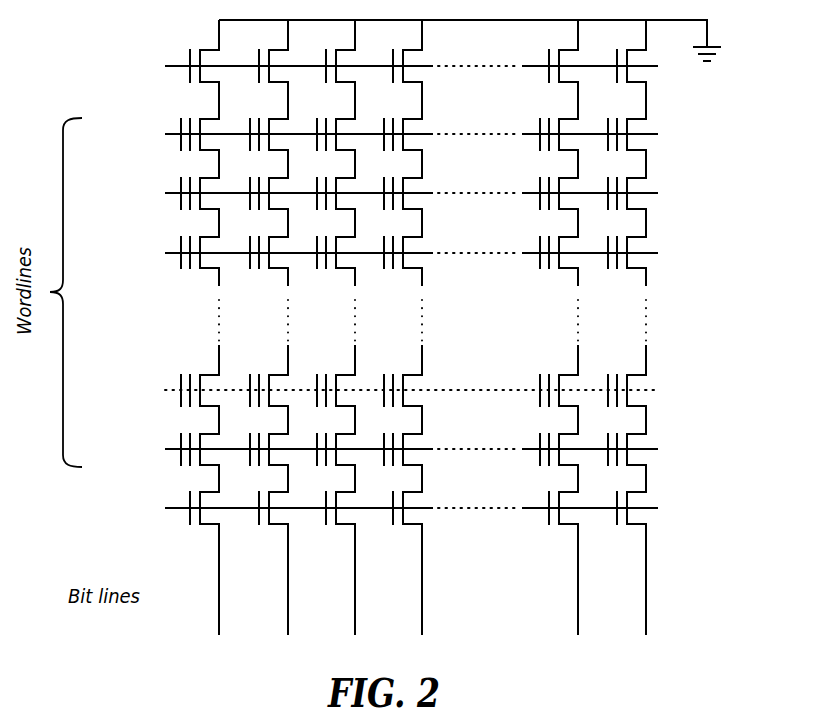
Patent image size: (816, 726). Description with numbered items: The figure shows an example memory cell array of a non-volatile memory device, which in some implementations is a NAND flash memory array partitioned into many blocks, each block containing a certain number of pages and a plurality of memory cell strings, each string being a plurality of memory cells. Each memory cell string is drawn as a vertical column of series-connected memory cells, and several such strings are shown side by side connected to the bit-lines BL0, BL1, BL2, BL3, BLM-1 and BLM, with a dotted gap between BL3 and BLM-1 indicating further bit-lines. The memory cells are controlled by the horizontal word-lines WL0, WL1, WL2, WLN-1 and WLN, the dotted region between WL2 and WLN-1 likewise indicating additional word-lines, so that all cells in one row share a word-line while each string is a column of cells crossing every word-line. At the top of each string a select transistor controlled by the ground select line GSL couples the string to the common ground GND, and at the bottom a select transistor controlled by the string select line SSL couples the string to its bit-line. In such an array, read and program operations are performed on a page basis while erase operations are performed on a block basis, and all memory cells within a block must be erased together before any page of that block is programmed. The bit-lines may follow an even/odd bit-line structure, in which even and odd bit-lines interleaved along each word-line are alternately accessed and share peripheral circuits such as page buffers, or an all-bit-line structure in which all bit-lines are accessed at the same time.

The ground select line GSL is at (342, 68).
The string select line SSL is at (350, 512).
The word-line WL0 is at (384, 145).
The word-line WL1 is at (384, 195).
The word-line WL2 is at (384, 246).
The word-line WLN-1 is at (372, 393).
The word-line WLN is at (381, 443).
The bit-line BL0 is at (200, 327).
The bit-line BL1 is at (269, 327).
The bit-line BL2 is at (336, 327).
The bit-line BL3 is at (403, 327).
The bit-line BLM-1 is at (559, 327).
The bit-line BLM is at (627, 327).
The ground GND is at (499, 42).